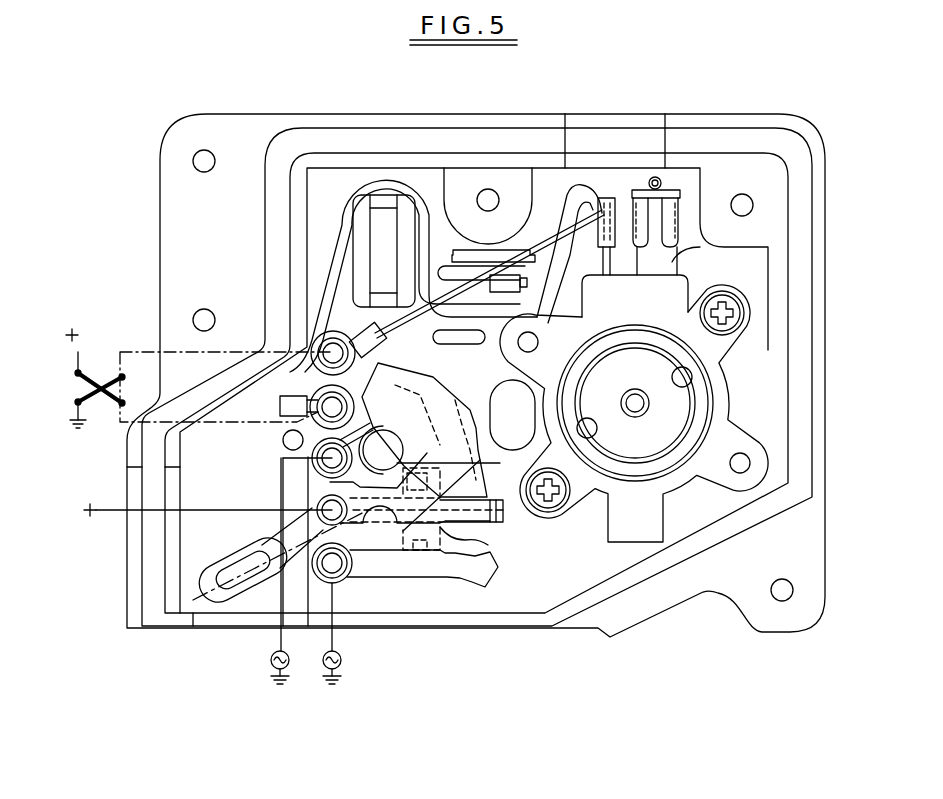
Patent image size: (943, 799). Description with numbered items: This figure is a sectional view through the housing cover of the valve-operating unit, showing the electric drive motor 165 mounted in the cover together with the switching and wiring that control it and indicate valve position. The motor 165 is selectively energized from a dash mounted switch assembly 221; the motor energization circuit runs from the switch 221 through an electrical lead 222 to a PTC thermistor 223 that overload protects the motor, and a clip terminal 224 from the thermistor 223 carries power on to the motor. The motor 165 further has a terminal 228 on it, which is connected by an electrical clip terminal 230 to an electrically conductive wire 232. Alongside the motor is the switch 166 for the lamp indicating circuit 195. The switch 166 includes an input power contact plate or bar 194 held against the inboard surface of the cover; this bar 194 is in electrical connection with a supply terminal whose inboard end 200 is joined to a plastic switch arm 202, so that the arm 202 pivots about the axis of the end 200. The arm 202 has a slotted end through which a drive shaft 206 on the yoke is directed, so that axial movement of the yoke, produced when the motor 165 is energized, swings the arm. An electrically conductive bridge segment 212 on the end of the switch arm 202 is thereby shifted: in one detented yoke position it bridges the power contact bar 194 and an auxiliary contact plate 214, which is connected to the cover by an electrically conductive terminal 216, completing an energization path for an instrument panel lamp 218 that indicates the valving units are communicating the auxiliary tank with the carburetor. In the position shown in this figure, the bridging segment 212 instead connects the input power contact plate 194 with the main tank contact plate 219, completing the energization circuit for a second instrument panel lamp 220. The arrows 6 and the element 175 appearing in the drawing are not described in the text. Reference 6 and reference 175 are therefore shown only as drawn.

The direction arrow 6 is at (510, 510).
The electric drive motor 165 is at (673, 403).
The switch 166 is at (452, 398).
The link 175 is at (481, 461).
The input power contact plate 194 is at (480, 528).
The lamp indicating circuit 195 is at (345, 645).
The inboard end 200 is at (320, 496).
The switch arm 202 is at (308, 626).
The drive shaft 206 is at (469, 408).
The bridge segment 212 is at (433, 390).
The auxiliary contact plate 214 is at (430, 567).
The terminal 216 is at (347, 577).
The instrument panel lamp 218 is at (343, 665).
The main tank contact plate 219 is at (367, 370).
The instrument panel lamp 220 is at (677, 260).
The switch assembly 221 is at (97, 377).
The electrical lead 222 is at (383, 333).
The PTC thermistor 223 is at (518, 258).
The clip terminal 224 is at (680, 222).
The terminal 228 is at (630, 257).
The electrical clip terminal 230 is at (628, 193).
The electrically conductive wire 232 is at (387, 178).